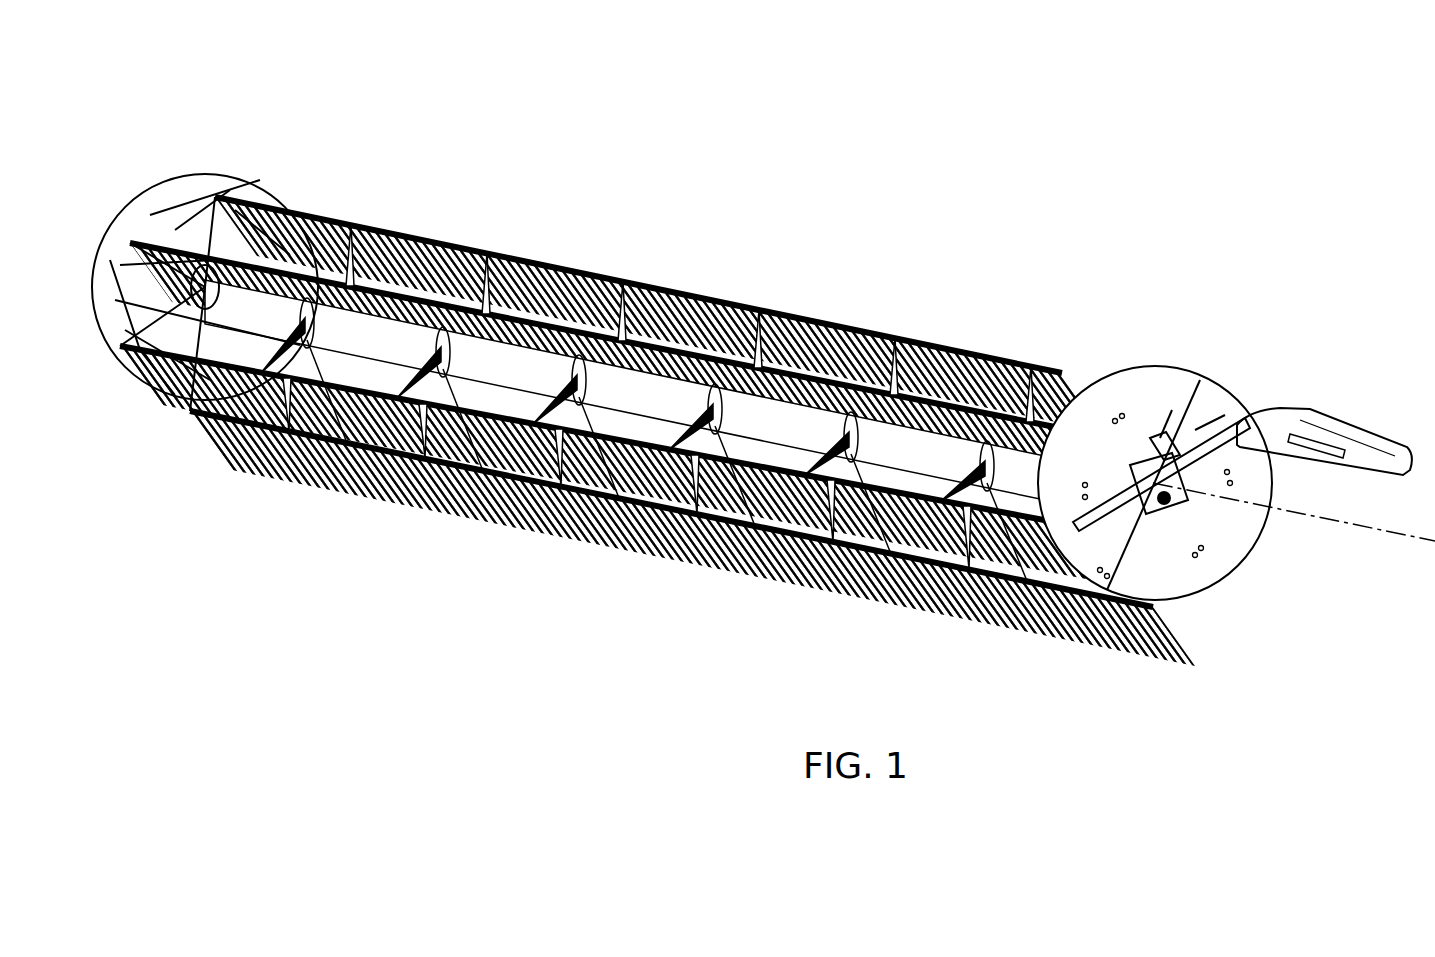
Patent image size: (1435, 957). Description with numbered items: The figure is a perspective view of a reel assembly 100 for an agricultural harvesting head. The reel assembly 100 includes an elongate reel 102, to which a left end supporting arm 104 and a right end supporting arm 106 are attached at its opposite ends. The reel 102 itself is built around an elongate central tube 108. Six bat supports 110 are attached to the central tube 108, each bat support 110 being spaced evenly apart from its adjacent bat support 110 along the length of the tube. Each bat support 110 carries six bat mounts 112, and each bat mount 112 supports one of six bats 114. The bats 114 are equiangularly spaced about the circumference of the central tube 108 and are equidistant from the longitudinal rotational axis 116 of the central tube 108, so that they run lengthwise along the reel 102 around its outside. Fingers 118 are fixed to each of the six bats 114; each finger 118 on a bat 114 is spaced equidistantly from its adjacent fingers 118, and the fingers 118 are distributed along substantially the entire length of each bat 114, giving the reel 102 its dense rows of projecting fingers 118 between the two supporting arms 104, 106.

The reel assembly 100 is at (1037, 120).
The reel 102 is at (815, 300).
The left end supporting arm 104 is at (1350, 440).
The right end supporting arm 106 is at (362, 215).
The central tube 108 is at (545, 392).
The bat support 110 is at (700, 432).
The bat mount 112 is at (1030, 360).
The bat 114 is at (550, 262).
The longitudinal rotational axis 116 is at (1392, 540).
The finger 118 is at (570, 520).